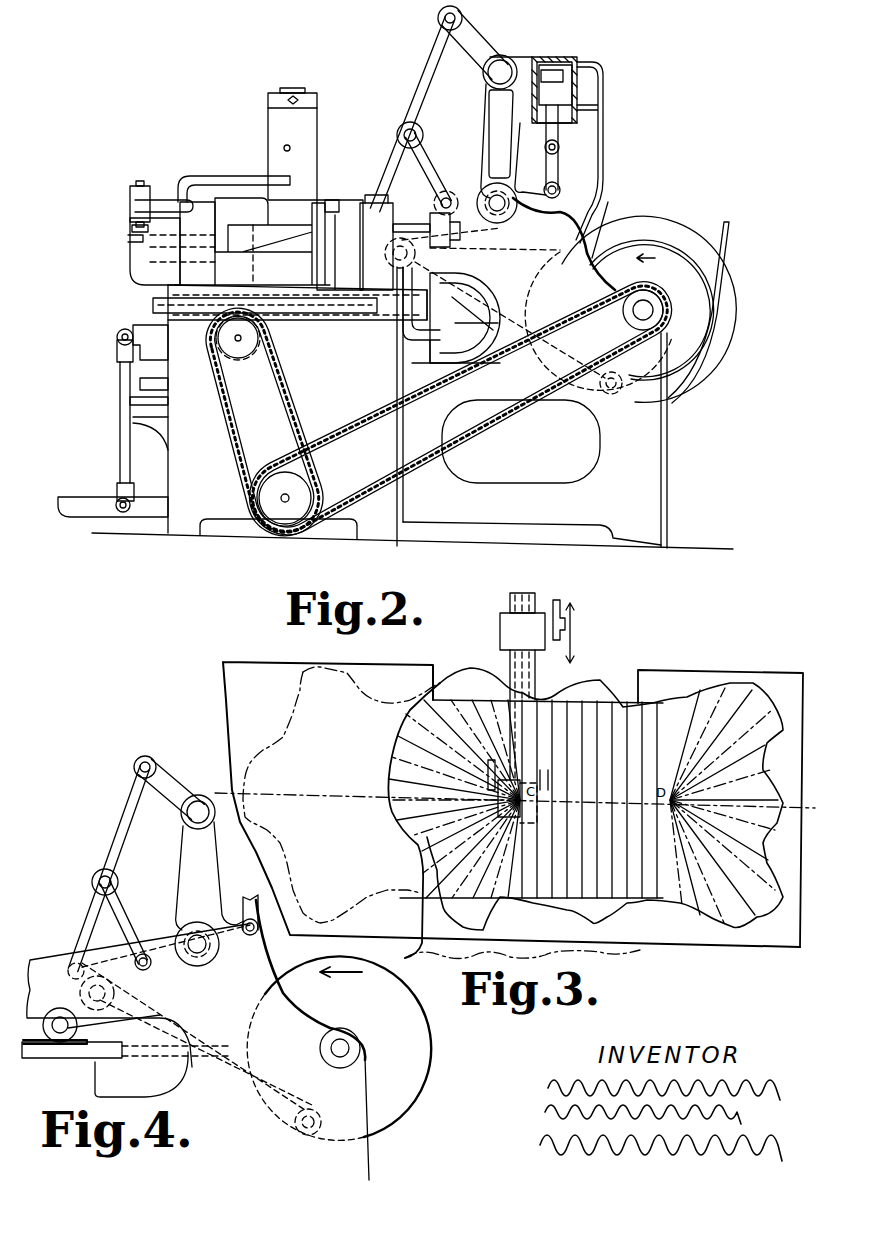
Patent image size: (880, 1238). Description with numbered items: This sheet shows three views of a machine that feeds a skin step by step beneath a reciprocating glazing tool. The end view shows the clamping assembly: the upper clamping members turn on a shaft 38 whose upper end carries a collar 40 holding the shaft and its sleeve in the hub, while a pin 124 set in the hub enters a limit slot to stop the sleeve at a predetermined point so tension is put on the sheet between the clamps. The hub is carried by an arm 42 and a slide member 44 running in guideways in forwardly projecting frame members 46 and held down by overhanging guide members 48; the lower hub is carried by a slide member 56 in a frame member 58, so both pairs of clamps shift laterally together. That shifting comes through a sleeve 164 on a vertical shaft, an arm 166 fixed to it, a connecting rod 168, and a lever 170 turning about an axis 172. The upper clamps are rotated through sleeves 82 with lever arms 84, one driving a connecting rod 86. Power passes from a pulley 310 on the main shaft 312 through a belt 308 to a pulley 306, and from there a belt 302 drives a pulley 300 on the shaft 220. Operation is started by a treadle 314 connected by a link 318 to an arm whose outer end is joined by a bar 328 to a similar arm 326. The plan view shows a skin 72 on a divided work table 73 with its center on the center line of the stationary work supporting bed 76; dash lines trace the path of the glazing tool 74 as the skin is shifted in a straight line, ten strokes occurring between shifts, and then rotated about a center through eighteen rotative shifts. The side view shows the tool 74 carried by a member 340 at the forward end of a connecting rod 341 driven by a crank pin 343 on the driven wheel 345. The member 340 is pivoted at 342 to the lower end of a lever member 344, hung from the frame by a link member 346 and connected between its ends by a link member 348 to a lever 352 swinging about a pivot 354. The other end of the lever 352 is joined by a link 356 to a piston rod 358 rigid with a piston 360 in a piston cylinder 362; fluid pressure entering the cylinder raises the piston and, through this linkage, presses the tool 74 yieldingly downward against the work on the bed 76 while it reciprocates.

In FIG. 2, the shaft 38 is at (289, 88).
In FIG. 2, the collar 40 is at (268, 100).
In FIG. 2, the pin 124 is at (284, 148).
In FIG. 2, the arm 42 is at (212, 186).
In FIG. 2, the slide member 44 is at (128, 239).
In FIG. 2, the frame members 46 is at (130, 260).
In FIG. 2, the overhanging guide members 48 is at (132, 228).
In FIG. 2, the slide member 56 is at (140, 385).
In FIG. 2, the frame member 58 is at (130, 401).
In FIG. 3, the skin 72 is at (735, 690).
In FIG. 3, the divided work table 73 is at (388, 671).
In FIG. 2, the glazing tool 74 is at (385, 314).
In FIG. 3, the glazing tool 74 is at (500, 640).
In FIG. 4, the glazing tool 74 is at (76, 1027).
In FIG. 3, the work supporting bed 76 is at (538, 681).
In FIG. 4, the work supporting bed 76 is at (68, 1052).
In FIG. 2, the sleeves 82 is at (205, 202).
In FIG. 2, the lever arm 84 is at (165, 200).
In FIG. 2, the connecting rod 86 is at (133, 186).
In FIG. 2, the sleeve 164 is at (372, 203).
In FIG. 2, the arm 166 is at (430, 208).
In FIG. 2, the connecting rod 168 is at (450, 240).
In FIG. 2, the lever 170 is at (268, 226).
In FIG. 2, the axis 172 is at (335, 200).
In FIG. 2, the shaft 220 is at (238, 336).
In FIG. 2, the pulley 300 is at (250, 365).
In FIG. 2, the belt 302 is at (284, 372).
In FIG. 2, the pulley 306 is at (316, 485).
In FIG. 2, the belt 308 is at (374, 418).
In FIG. 2, the pulley 310 is at (623, 330).
In FIG. 2, the main shaft 312 is at (653, 310).
In FIG. 2, the treadle 314 is at (80, 497).
In FIG. 2, the link 318 is at (125, 425).
In FIG. 2, the arm 326 is at (146, 328).
In FIG. 2, the bar 328 is at (117, 337).
In FIG. 3, the member 340 is at (505, 610).
In FIG. 4, the member 340 is at (72, 1003).
In FIG. 2, the connecting rod 341 is at (508, 304).
In FIG. 4, the connecting rod 341 is at (248, 1092).
In FIG. 4, the pivot 342 is at (70, 963).
In FIG. 2, the crank pin 343 is at (616, 396).
In FIG. 4, the crank pin 343 is at (312, 1110).
In FIG. 2, the lever member 344 is at (430, 68).
In FIG. 4, the lever member 344 is at (120, 810).
In FIG. 2, the driven wheel 345 is at (736, 354).
In FIG. 4, the driven wheel 345 is at (432, 1050).
In FIG. 2, the link member 346 is at (478, 45).
In FIG. 4, the link member 346 is at (168, 780).
In FIG. 2, the link member 348 is at (428, 166).
In FIG. 4, the link member 348 is at (128, 915).
In FIG. 2, the lever 352 is at (520, 212).
In FIG. 4, the lever 352 is at (226, 948).
In FIG. 4, the pivot 354 is at (197, 955).
In FIG. 2, the link 356 is at (560, 172).
In FIG. 4, the link 356 is at (256, 924).
In FIG. 2, the piston rod 358 is at (560, 146).
In FIG. 2, the piston 360 is at (565, 85).
In FIG. 2, the piston cylinder 362 is at (568, 58).